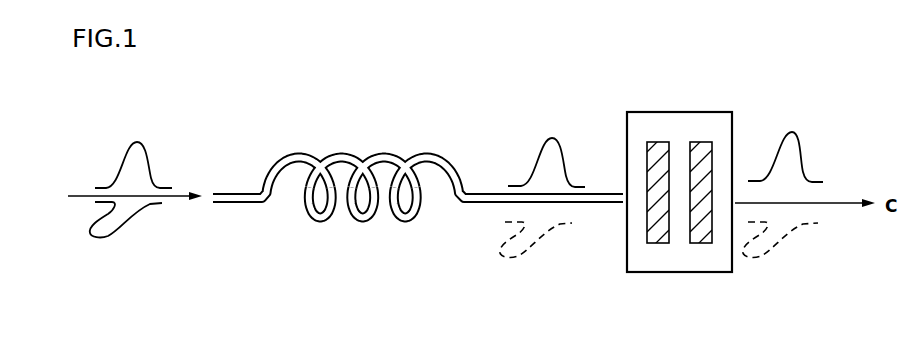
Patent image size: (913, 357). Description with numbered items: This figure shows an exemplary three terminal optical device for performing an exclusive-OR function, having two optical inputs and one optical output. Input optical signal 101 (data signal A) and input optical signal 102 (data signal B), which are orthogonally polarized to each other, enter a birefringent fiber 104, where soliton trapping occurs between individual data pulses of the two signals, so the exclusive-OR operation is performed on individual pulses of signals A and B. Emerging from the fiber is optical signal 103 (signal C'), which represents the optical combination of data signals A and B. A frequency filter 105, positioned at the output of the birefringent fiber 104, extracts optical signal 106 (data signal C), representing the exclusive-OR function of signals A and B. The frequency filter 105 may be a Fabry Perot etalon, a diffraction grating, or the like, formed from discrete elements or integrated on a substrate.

The input optical signal 101 is at (141, 145).
The input optical signal 102 is at (116, 244).
The optical signal 103 is at (558, 141).
The birefringent fiber 104 is at (343, 156).
The frequency filter 105 is at (655, 108).
The optical signal 106 is at (798, 136).